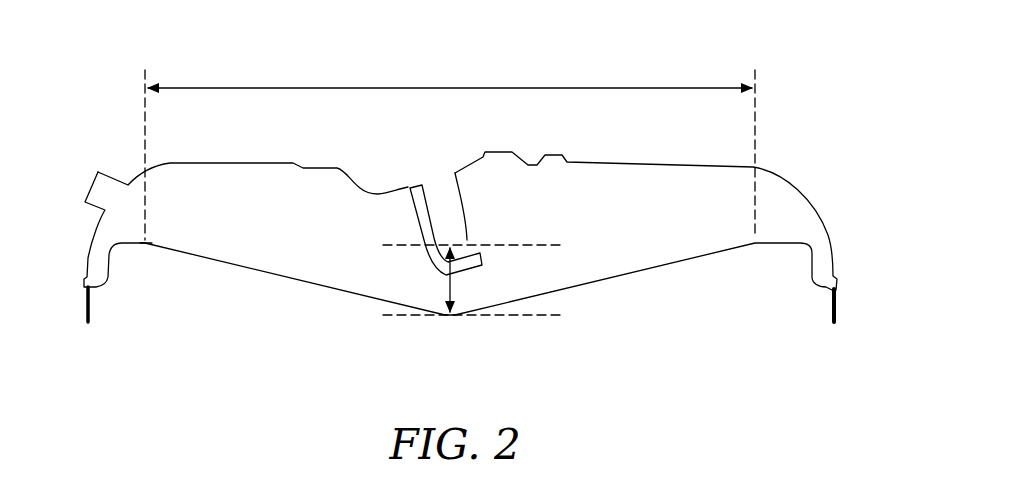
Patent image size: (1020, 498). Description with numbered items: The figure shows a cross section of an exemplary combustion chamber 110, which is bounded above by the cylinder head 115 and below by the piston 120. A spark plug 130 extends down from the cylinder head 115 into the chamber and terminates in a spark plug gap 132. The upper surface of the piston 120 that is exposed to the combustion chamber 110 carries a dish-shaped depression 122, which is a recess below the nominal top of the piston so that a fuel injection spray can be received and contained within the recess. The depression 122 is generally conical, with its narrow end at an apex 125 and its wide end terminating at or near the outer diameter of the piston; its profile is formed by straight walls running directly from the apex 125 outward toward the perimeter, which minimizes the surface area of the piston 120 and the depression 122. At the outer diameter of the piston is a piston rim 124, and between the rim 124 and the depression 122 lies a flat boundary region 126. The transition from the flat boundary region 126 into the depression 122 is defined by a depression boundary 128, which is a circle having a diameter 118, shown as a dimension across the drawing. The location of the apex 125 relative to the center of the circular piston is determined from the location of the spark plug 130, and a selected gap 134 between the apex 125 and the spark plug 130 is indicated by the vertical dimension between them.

The combustion chamber 110 is at (227, 236).
The cylinder head 115 is at (665, 156).
The diameter 118 is at (447, 88).
The piston 120 is at (671, 300).
The dish-shaped depression 122 is at (284, 286).
The piston rim 124 is at (107, 291).
The apex 125 is at (455, 324).
The flat boundary region 126 is at (132, 250).
The depression boundary 128 is at (148, 238).
The spark plug 130 is at (404, 180).
The spark plug gap 132 is at (469, 240).
The selected gap 134 is at (450, 278).